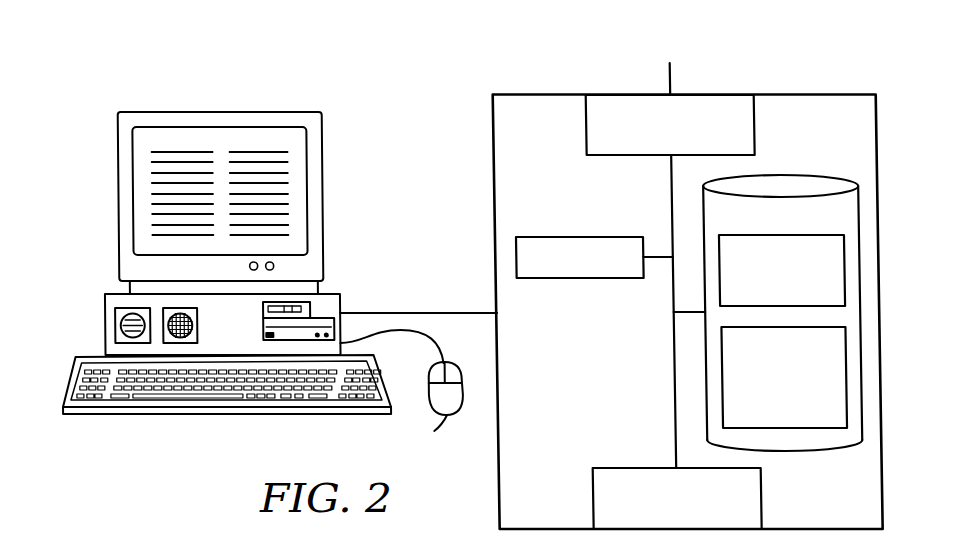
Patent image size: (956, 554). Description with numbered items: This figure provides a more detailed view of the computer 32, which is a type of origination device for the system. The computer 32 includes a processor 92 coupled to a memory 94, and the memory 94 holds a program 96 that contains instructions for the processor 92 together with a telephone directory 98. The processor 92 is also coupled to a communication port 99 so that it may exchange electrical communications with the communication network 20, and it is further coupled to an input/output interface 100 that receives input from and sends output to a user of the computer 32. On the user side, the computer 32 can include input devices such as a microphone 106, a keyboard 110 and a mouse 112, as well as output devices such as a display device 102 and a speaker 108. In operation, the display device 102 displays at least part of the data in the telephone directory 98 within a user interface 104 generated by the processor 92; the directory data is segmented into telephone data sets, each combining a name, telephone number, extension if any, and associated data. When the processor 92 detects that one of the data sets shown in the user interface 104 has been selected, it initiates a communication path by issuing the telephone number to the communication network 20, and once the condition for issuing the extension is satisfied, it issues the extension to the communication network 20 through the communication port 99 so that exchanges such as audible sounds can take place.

The computer 32 is at (84, 115).
The display device 102 is at (119, 195).
The user interface 104 is at (223, 127).
The microphone 106 is at (115, 327).
The speaker 108 is at (197, 327).
The keyboard 110 is at (224, 418).
The mouse 112 is at (442, 414).
The communication network 20 is at (668, 54).
The communication port 99 is at (589, 126).
The processor 92 is at (576, 237).
The memory 94 is at (784, 181).
The program 96 is at (797, 297).
The telephone directory 98 is at (796, 409).
The input/output interface 100 is at (758, 495).